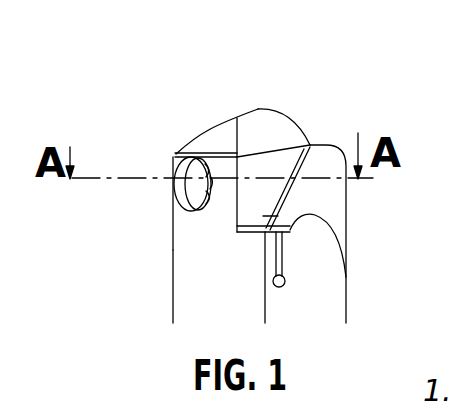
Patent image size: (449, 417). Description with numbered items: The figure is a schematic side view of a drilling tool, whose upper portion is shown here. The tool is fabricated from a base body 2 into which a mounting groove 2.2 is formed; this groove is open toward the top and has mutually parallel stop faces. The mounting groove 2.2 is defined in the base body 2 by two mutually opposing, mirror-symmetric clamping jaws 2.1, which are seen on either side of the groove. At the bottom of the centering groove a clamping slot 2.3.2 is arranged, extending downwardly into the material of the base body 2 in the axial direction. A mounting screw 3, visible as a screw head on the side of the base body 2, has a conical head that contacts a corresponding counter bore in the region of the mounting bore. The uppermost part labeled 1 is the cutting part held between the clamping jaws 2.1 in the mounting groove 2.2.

The cutting insert with clamping top 1 is at (278, 140).
The base body 2 is at (182, 262).
The clamping jaws 2.1 is at (180, 207).
The mounting groove 2.2 is at (166, 274).
The clamping slot 2.3.2 is at (282, 262).
The mounting screw 3 is at (183, 163).